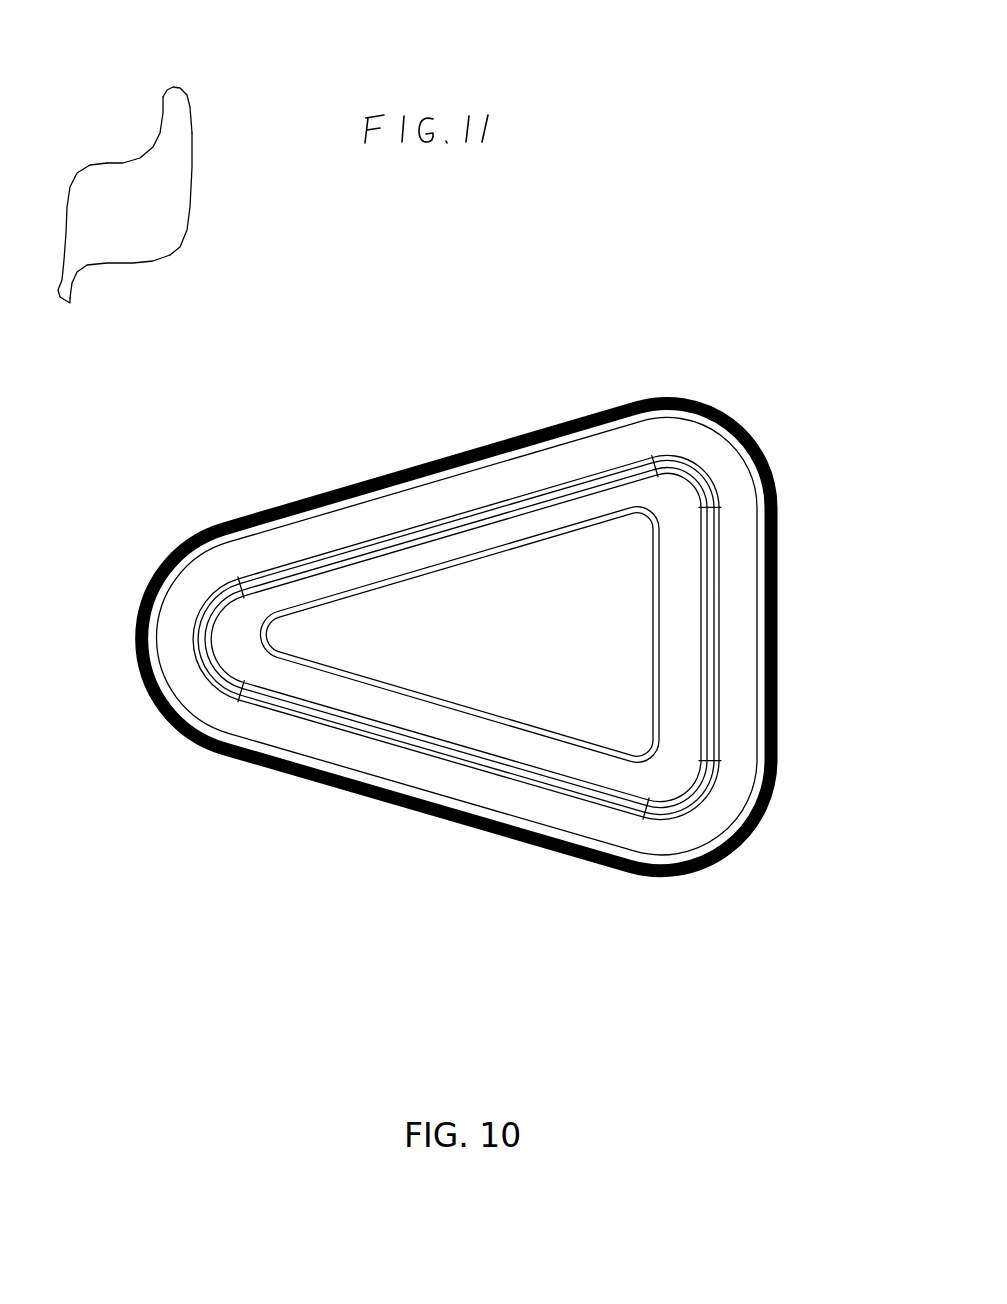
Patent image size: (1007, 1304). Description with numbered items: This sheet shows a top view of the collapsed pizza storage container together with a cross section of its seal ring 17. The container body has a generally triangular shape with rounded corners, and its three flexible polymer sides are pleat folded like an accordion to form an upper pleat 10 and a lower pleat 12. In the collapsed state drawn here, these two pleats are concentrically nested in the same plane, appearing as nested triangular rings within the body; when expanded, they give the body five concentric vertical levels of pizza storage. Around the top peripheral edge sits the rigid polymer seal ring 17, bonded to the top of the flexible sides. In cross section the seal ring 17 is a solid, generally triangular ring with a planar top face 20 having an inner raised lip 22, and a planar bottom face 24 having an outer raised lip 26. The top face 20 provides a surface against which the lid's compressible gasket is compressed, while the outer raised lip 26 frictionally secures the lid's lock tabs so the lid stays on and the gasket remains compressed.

In FIG. 10, the upper pleat 10 is at (680, 473).
In FIG. 10, the lower pleat 12 is at (645, 610).
In FIG. 11, the seal ring 17 is at (191, 187).
In FIG. 11, the planar top face 20 is at (123, 163).
In FIG. 11, the inner raised lip 22 is at (180, 88).
In FIG. 11, the planar bottom face 24 is at (133, 263).
In FIG. 11, the outer raised lip 26 is at (70, 303).